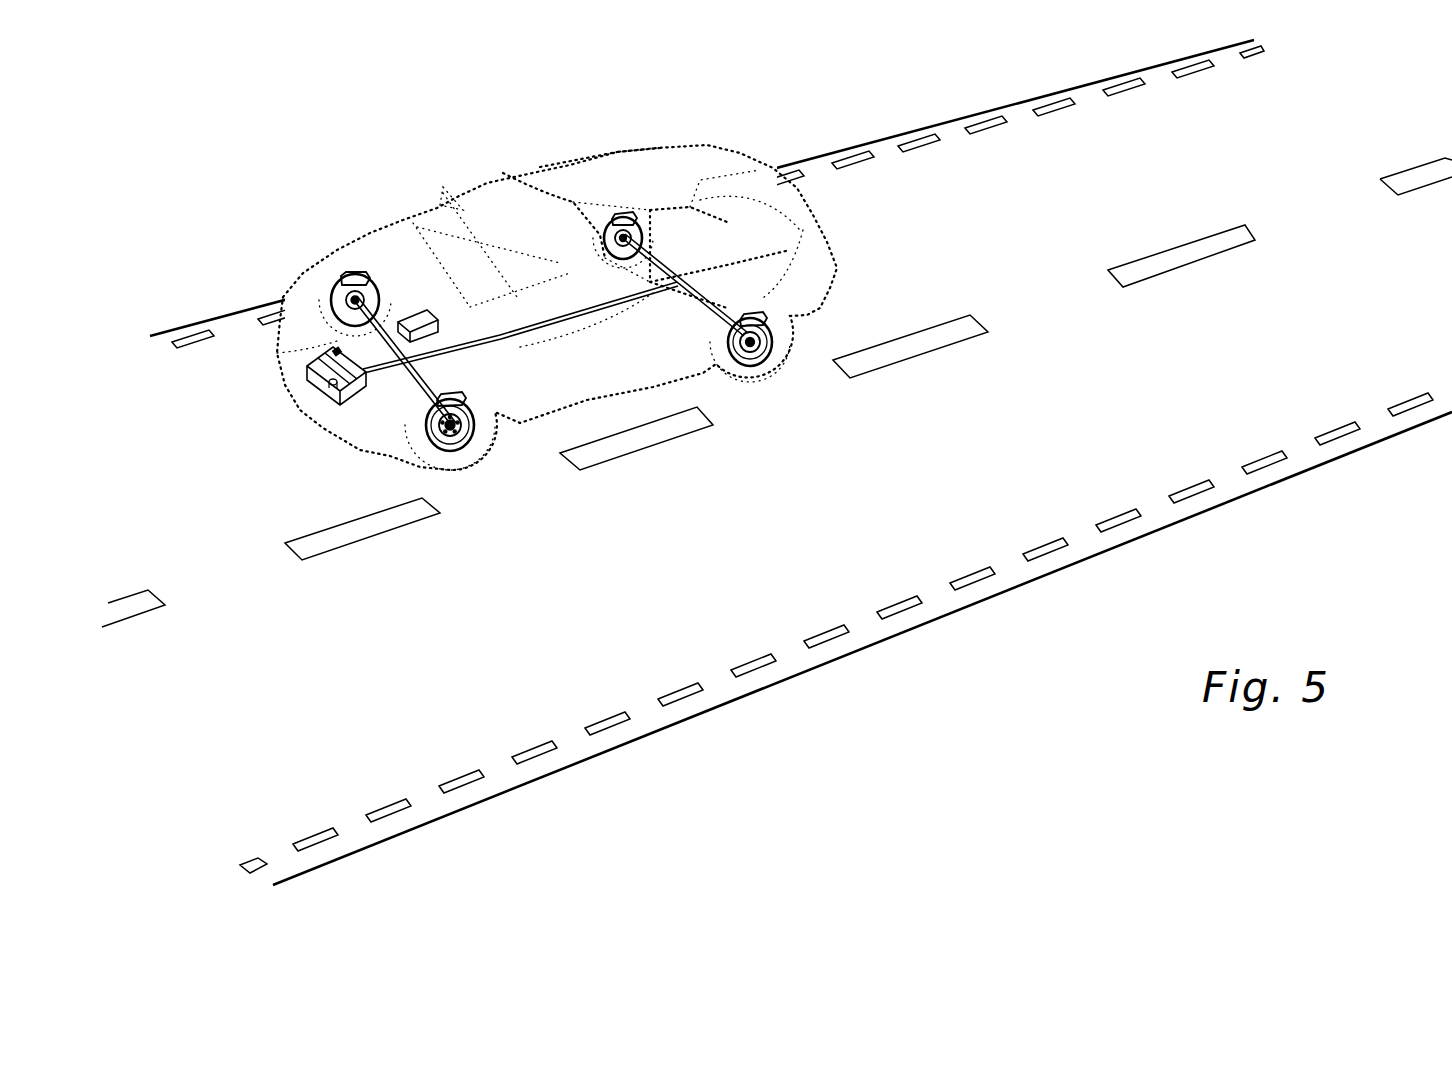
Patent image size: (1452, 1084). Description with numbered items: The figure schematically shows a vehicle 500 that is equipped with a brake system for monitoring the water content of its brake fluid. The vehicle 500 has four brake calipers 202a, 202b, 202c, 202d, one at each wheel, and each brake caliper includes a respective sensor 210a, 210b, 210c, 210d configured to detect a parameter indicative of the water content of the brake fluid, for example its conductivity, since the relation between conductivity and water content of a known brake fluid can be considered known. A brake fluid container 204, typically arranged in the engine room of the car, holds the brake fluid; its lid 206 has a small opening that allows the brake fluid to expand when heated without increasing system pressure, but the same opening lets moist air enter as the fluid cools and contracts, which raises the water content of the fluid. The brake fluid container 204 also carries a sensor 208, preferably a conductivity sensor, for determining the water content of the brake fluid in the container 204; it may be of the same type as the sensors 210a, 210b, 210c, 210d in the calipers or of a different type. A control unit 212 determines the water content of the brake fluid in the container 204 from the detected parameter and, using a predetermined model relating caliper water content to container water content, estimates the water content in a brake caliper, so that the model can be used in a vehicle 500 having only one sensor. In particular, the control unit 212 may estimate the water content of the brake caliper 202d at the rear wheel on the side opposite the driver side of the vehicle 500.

The vehicle 500 is at (749, 128).
The brake caliper 202a is at (351, 296).
The brake caliper 202b is at (452, 452).
The brake caliper 202c is at (760, 368).
The brake caliper 202d is at (617, 232).
The sensor 210a is at (343, 277).
The sensor 210b is at (470, 390).
The sensor 210c is at (760, 318).
The sensor 210d is at (625, 217).
The control unit 212 is at (405, 318).
The brake fluid container 204 is at (278, 361).
The lid 206 is at (330, 383).
The sensor 208 is at (336, 351).